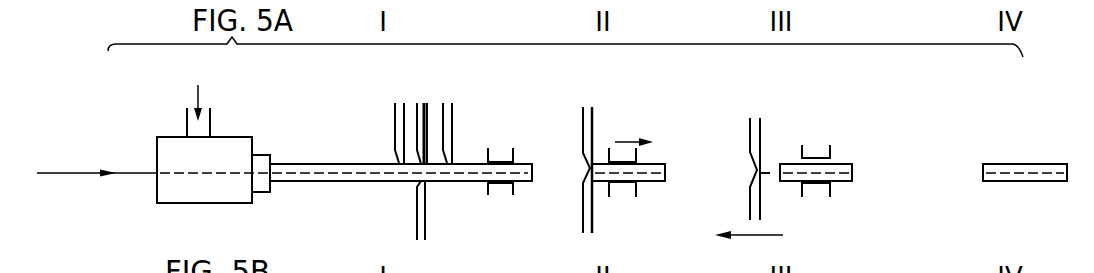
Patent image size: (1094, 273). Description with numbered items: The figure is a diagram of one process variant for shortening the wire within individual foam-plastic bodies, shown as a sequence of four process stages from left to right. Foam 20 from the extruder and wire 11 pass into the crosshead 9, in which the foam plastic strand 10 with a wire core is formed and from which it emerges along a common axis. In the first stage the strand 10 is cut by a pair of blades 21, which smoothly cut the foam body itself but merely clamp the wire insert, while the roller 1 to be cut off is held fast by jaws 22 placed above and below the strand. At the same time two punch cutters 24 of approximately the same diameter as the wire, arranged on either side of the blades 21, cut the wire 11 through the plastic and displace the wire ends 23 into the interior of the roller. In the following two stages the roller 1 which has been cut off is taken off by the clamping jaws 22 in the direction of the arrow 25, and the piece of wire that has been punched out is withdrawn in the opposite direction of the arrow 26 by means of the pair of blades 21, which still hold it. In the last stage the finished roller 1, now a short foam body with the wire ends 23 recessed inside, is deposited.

The roller 1 is at (838, 164).
The crosshead 9 is at (170, 148).
The foam plastic strand 10 is at (343, 165).
The wire 11 is at (83, 172).
The foam 20 is at (200, 97).
The pair of blades 21 is at (421, 106).
The jaws 22 is at (502, 183).
The wire ends 23 is at (586, 169).
The punch cutters 24 is at (395, 132).
The arrow 25 is at (617, 142).
The arrow 26 is at (740, 236).